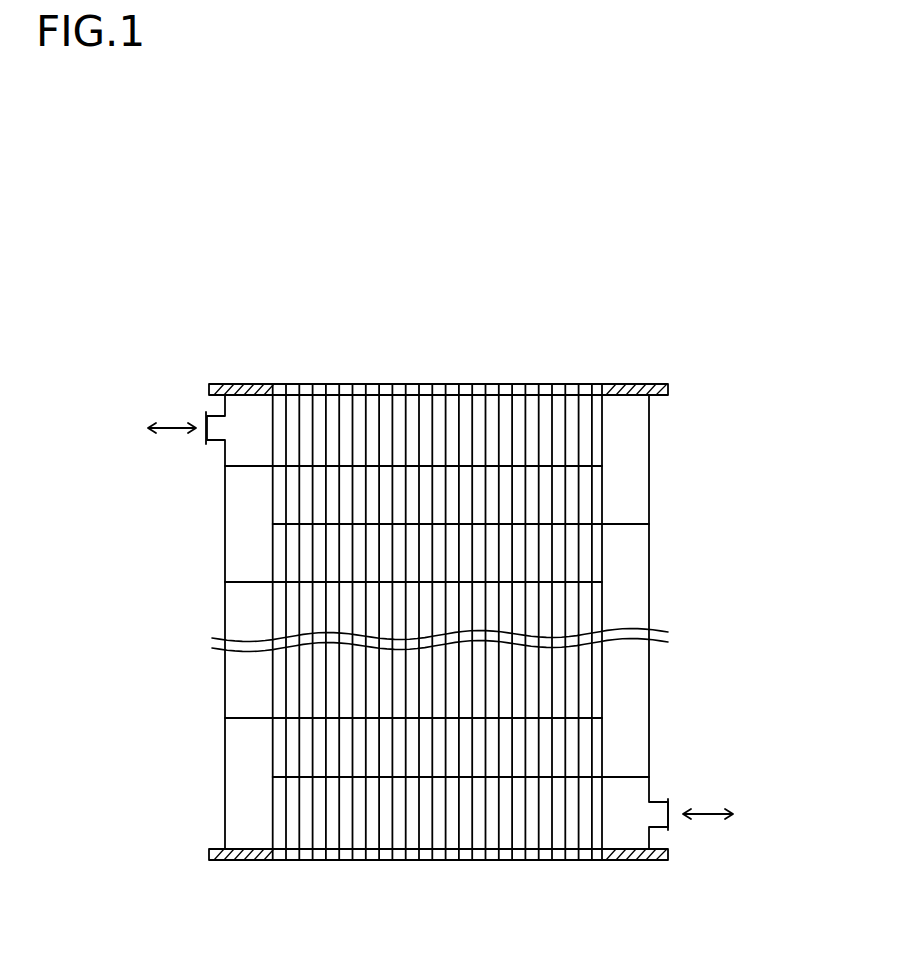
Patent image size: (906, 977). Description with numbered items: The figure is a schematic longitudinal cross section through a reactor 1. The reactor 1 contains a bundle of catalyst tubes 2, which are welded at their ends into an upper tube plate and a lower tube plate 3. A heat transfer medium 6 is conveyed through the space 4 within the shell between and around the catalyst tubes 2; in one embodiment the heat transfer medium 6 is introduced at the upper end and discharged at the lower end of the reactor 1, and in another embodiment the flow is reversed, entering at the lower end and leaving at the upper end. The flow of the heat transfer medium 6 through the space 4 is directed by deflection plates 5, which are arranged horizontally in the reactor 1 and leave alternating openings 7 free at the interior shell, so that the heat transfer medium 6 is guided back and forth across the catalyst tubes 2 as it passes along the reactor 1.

The reactor 1 is at (710, 392).
The catalyst tubes 2 is at (594, 416).
The tube plate 3 is at (240, 386).
The space within the shell 4 is at (278, 496).
The deflection plates 5 is at (253, 465).
The heat transfer medium 6 is at (160, 424).
The openings 7 is at (627, 463).